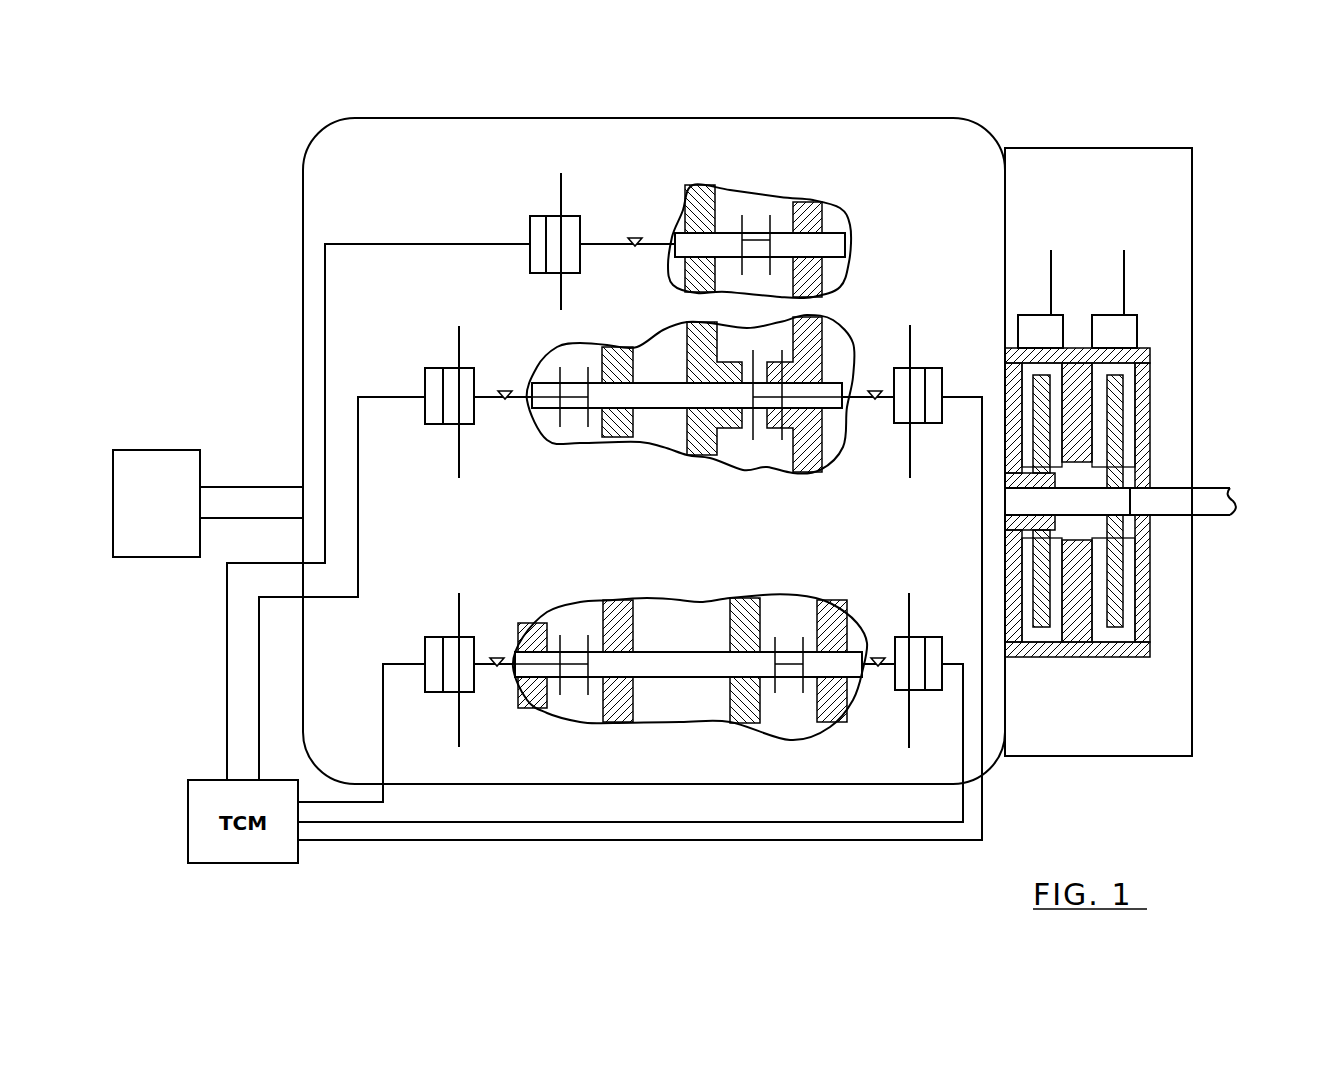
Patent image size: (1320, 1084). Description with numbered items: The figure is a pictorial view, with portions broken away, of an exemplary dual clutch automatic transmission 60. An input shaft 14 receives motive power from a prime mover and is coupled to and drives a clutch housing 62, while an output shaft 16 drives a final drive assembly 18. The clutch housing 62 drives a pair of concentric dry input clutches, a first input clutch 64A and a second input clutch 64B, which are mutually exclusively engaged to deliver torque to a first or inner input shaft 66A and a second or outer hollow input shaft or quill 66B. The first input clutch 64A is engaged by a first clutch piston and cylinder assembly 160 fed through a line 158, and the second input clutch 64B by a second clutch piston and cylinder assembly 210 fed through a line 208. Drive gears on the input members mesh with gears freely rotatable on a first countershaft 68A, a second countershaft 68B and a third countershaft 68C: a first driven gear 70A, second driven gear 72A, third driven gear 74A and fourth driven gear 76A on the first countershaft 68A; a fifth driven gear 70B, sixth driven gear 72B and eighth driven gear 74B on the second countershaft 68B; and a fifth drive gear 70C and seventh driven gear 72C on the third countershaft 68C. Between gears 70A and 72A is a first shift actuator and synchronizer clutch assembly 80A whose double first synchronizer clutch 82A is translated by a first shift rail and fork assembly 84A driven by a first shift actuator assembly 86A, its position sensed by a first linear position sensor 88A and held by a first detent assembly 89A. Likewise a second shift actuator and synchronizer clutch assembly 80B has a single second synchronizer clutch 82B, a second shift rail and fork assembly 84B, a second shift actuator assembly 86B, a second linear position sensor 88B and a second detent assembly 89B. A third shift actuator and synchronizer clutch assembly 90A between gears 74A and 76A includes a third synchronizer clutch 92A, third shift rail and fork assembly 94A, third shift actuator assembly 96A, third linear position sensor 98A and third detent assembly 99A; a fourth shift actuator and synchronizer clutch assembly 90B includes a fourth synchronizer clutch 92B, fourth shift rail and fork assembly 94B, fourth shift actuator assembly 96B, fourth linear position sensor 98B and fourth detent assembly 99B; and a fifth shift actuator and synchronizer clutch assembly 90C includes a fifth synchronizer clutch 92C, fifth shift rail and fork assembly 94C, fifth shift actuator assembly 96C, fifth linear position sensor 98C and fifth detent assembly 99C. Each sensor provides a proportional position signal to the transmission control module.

The input shaft 14 is at (1222, 487).
The output shaft 16 is at (228, 487).
The final drive assembly 18 is at (150, 450).
The dual clutch automatic transmission 60 is at (1224, 145).
The clutch housing 62 is at (1150, 400).
The first input clutch 64A is at (1118, 445).
The second input clutch 64B is at (1043, 530).
The first input shaft 66A is at (1120, 503).
The second input shaft 66B is at (1012, 532).
The first countershaft 68A is at (657, 663).
The second countershaft 68B is at (657, 398).
The third countershaft 68C is at (838, 246).
The first driven gear 70A is at (840, 710).
The fifth driven gear 70B is at (810, 462).
The fifth drive gear 70C is at (812, 210).
The second driven gear 72A is at (745, 712).
The sixth driven gear 72B is at (703, 450).
The seventh driven gear 72C is at (695, 205).
The third driven gear 74A is at (613, 722).
The eighth driven gear 74B is at (617, 432).
The fourth driven gear 76A is at (545, 710).
The first shift actuator and synchronizer clutch assembly 80A is at (848, 552).
The second shift actuator and synchronizer clutch assembly 80B is at (848, 308).
The first synchronizer clutch 82A is at (790, 670).
The second synchronizer clutch 82B is at (772, 400).
The first shift rail and fork assembly 84A is at (815, 655).
The second shift rail and fork assembly 84B is at (885, 402).
The first shift actuator assembly 86A is at (918, 650).
The second shift actuator assembly 86B is at (918, 383).
The first linear position sensor 88A is at (930, 685).
The second linear position sensor 88B is at (935, 417).
The first detent assembly 89A is at (878, 655).
The second detent assembly 89B is at (875, 388).
The third shift actuator and synchronizer clutch assembly 90A is at (478, 554).
The fourth shift actuator and synchronizer clutch assembly 90B is at (478, 292).
The fifth shift actuator and synchronizer clutch assembly 90C is at (980, 116).
The third synchronizer clutch 92A is at (565, 660).
The fourth synchronizer clutch 92B is at (572, 395).
The fifth synchronizer clutch 92C is at (756, 240).
The third shift rail and fork assembly 94A is at (485, 670).
The fourth shift rail and fork assembly 94B is at (487, 402).
The fifth shift rail and fork assembly 94C is at (607, 246).
The third shift actuator assembly 96A is at (450, 685).
The fourth shift actuator assembly 96B is at (450, 415).
The fifth shift actuator assembly 96C is at (572, 222).
The third linear position sensor 98A is at (425, 648).
The fourth linear position sensor 98B is at (433, 380).
The fifth linear position sensor 98C is at (540, 222).
The third detent assembly 99A is at (500, 655).
The fourth detent assembly 99B is at (508, 388).
The fifth detent assembly 99C is at (635, 236).
The line 158 is at (1127, 280).
The first clutch piston and cylinder assembly 160 is at (1127, 330).
The line 208 is at (1053, 280).
The second clutch piston and cylinder assembly 210 is at (1038, 325).